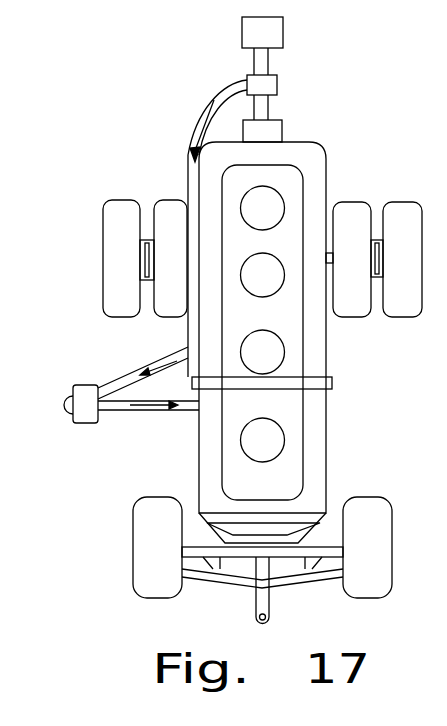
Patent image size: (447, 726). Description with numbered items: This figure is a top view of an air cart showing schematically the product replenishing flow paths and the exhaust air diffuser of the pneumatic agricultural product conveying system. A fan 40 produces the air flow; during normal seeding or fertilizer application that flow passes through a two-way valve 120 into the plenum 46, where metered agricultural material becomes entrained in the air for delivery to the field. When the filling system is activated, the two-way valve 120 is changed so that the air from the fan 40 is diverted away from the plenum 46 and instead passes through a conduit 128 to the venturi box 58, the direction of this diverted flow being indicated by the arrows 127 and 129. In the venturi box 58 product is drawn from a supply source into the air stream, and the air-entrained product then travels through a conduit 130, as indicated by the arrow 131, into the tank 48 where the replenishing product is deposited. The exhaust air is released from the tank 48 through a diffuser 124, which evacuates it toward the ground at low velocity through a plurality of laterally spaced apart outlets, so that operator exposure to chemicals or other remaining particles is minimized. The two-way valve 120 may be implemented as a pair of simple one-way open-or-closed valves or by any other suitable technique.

The fan 40 is at (242, 31).
The two-way valve 120 is at (282, 84).
The plenum 46 is at (285, 129).
The tank 48 is at (317, 332).
The diffuser 124 is at (333, 380).
The arrow 127 is at (196, 132).
The conduit 128 is at (113, 380).
The arrow 129 is at (160, 362).
The conduit 130 is at (115, 407).
The arrow 131 is at (147, 411).
The venturi box 58 is at (73, 418).